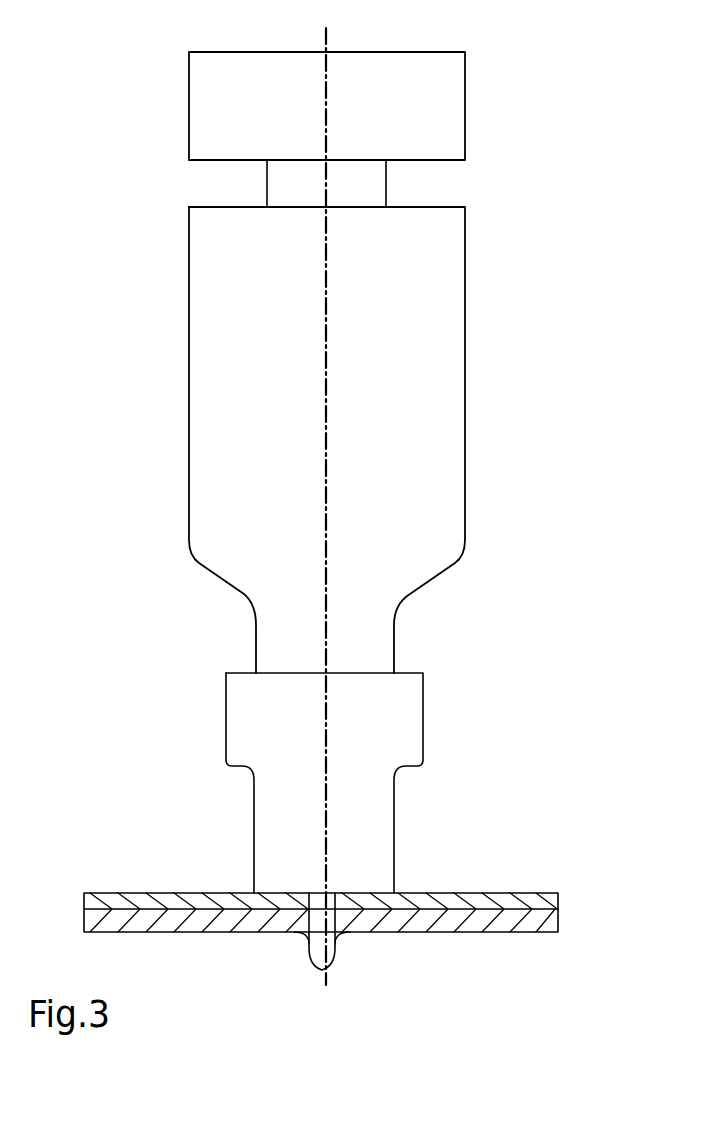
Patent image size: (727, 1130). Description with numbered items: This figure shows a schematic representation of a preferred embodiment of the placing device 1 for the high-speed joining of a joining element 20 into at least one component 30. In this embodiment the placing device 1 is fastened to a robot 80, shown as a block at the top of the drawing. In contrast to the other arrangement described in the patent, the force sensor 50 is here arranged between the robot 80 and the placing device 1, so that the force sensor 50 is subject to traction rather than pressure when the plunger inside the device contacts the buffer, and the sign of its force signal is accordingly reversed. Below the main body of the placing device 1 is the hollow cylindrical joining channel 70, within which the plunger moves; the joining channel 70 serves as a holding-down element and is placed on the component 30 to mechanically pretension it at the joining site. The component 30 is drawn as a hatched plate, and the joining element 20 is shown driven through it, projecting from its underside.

The placing device 1 is at (522, 392).
The joining element 20 is at (328, 933).
The component 30 is at (530, 910).
The force sensor 50 is at (367, 186).
The joining channel 70 is at (367, 730).
The robot 80 is at (242, 103).